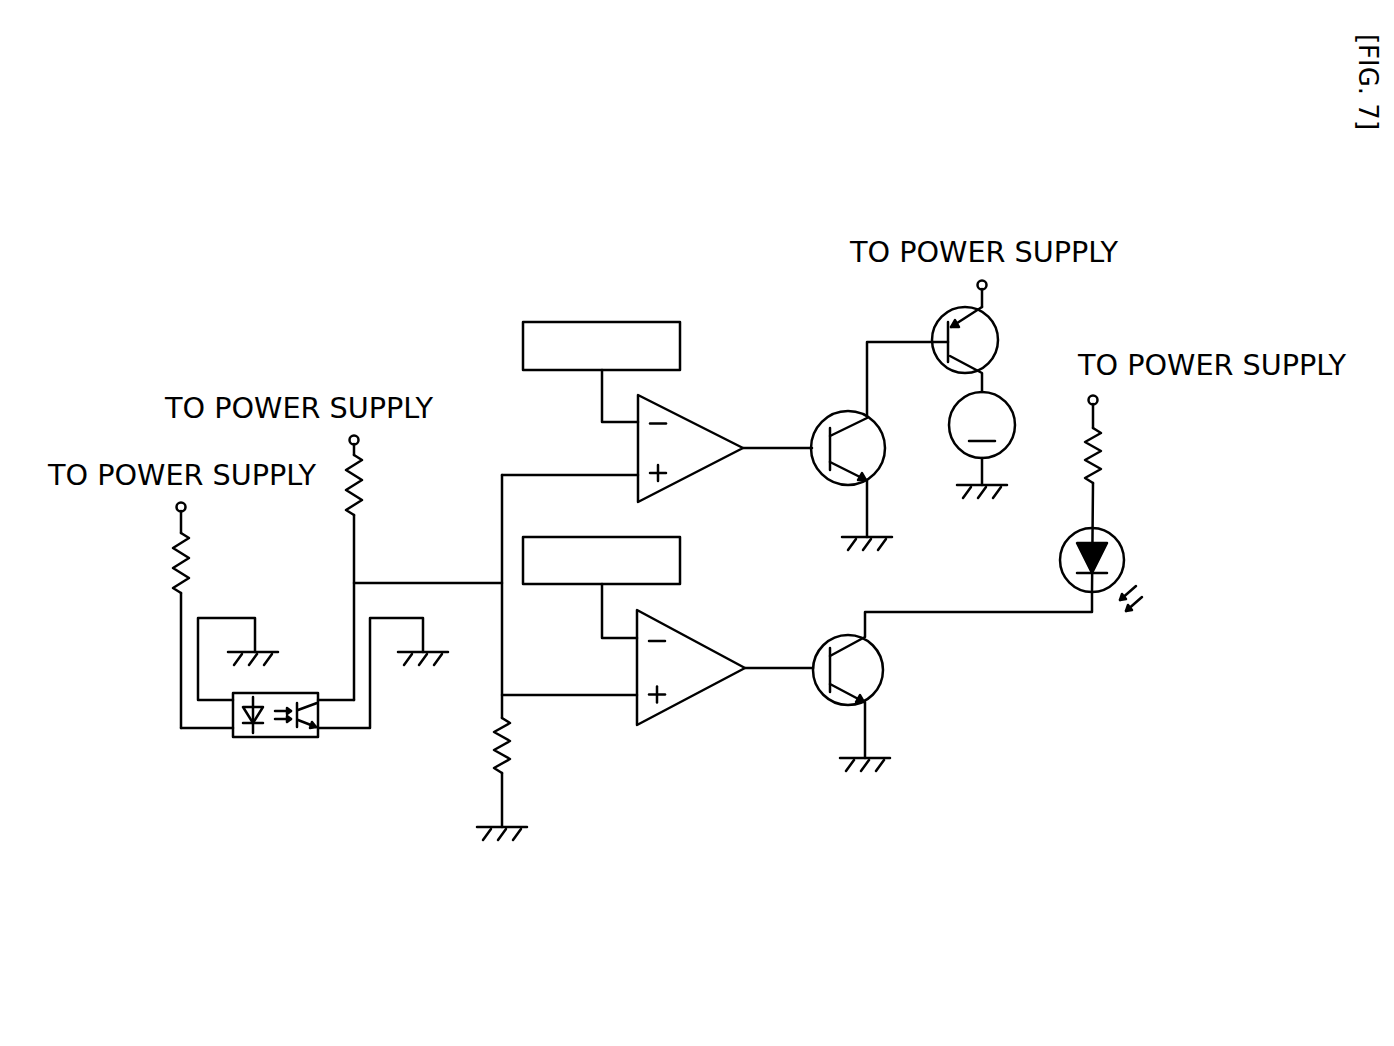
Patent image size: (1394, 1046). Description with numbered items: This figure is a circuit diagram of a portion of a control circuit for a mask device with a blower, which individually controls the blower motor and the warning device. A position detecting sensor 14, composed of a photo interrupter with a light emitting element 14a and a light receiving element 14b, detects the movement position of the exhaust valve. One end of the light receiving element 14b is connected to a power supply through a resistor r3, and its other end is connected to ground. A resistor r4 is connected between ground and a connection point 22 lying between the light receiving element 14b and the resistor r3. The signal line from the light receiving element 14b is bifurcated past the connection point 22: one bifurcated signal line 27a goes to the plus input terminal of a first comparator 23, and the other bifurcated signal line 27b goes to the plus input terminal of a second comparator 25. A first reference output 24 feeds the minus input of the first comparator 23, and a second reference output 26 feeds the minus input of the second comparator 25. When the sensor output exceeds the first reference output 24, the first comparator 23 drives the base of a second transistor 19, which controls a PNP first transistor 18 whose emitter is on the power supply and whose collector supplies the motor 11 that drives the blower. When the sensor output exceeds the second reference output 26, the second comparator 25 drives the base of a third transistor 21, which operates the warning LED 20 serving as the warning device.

The position detecting sensor 14 is at (319, 705).
The light emitting element 14a is at (257, 737).
The light receiving element 14b is at (292, 737).
The resistor r3 is at (362, 568).
The resistor r4 is at (486, 657).
The connection point 22 is at (357, 580).
The bifurcated signal line 27a is at (537, 474).
The bifurcated signal line 27b is at (530, 697).
The first reference output 24 is at (680, 345).
The second reference output 26 is at (680, 560).
The first comparator 23 is at (695, 480).
The second comparator 25 is at (673, 710).
The second transistor 19 is at (828, 417).
The first transistor 18 is at (998, 328).
The motor 11 is at (1016, 433).
The third transistor 21 is at (882, 692).
The warning LED 20 is at (1120, 568).